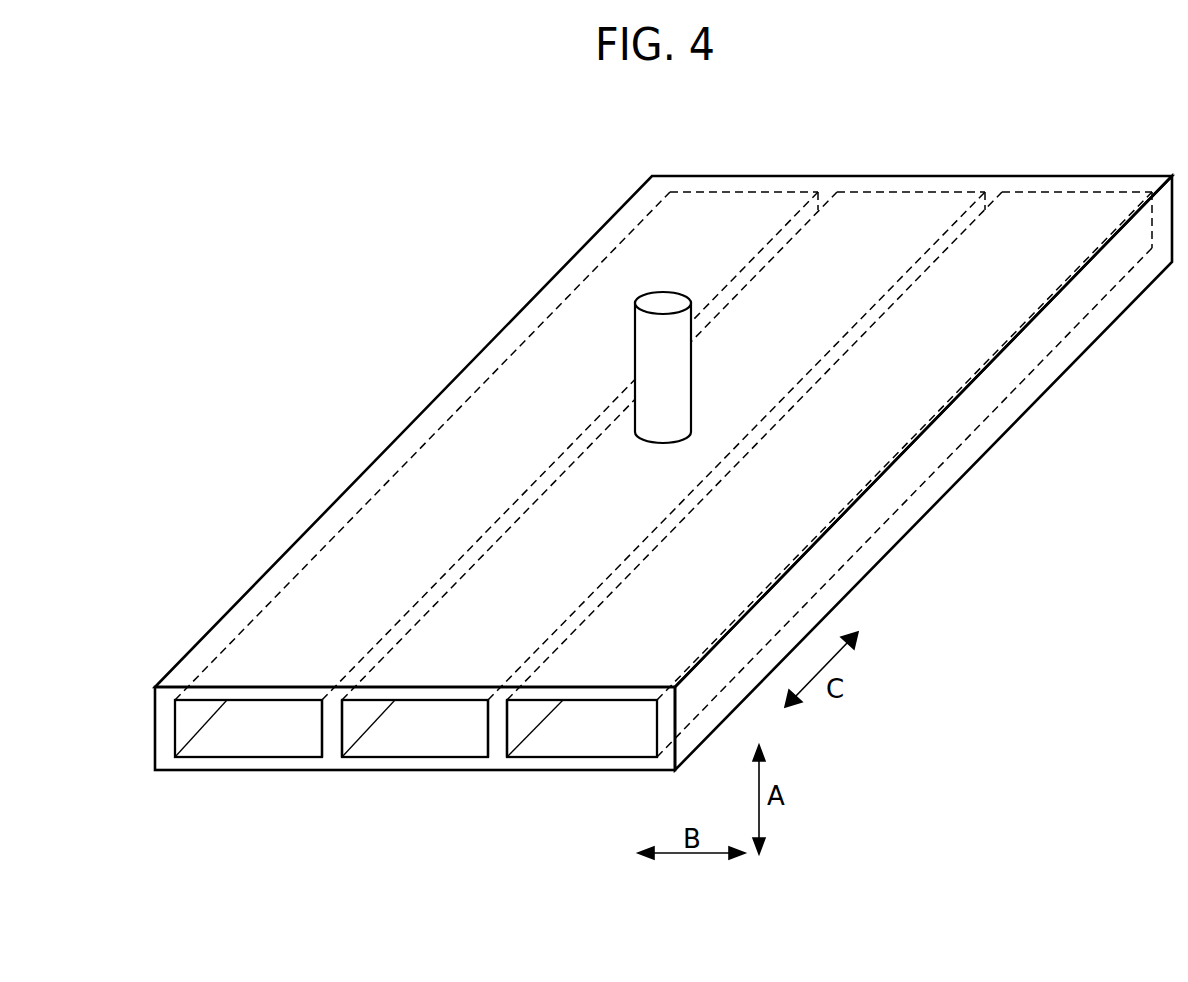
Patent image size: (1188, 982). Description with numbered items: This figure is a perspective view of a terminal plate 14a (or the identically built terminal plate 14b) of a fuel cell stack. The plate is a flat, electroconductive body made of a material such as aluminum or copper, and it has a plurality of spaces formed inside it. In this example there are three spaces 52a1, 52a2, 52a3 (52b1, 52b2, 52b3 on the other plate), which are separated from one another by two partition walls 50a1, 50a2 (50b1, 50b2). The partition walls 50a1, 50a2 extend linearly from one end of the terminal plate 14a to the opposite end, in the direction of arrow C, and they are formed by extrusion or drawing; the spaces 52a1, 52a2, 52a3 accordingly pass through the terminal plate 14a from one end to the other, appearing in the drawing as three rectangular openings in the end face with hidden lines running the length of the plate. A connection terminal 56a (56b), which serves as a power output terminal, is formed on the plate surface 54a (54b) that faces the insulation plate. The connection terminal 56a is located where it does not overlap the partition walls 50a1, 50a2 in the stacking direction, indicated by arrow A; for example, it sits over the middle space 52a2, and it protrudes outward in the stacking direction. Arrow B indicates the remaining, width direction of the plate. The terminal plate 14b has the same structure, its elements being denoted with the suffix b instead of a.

The terminal plate 14a is at (663, 485).
The terminal plate 14b is at (762, 121).
The partition wall 50a1 is at (714, 534).
The partition wall 50b1 is at (500, 722).
The partition wall 50a2 is at (545, 535).
The partition wall 50b2 is at (335, 722).
The space 52a1 is at (829, 516).
The space 52b1 is at (562, 733).
The space 52a2 is at (658, 516).
The space 52b2 is at (397, 735).
The space 52a3 is at (487, 516).
The space 52b3 is at (225, 732).
The plate surface 54a is at (663, 431).
The plate surface 54b is at (808, 458).
The connection terminal 56a is at (682, 338).
The connection terminal 56b is at (663, 317).